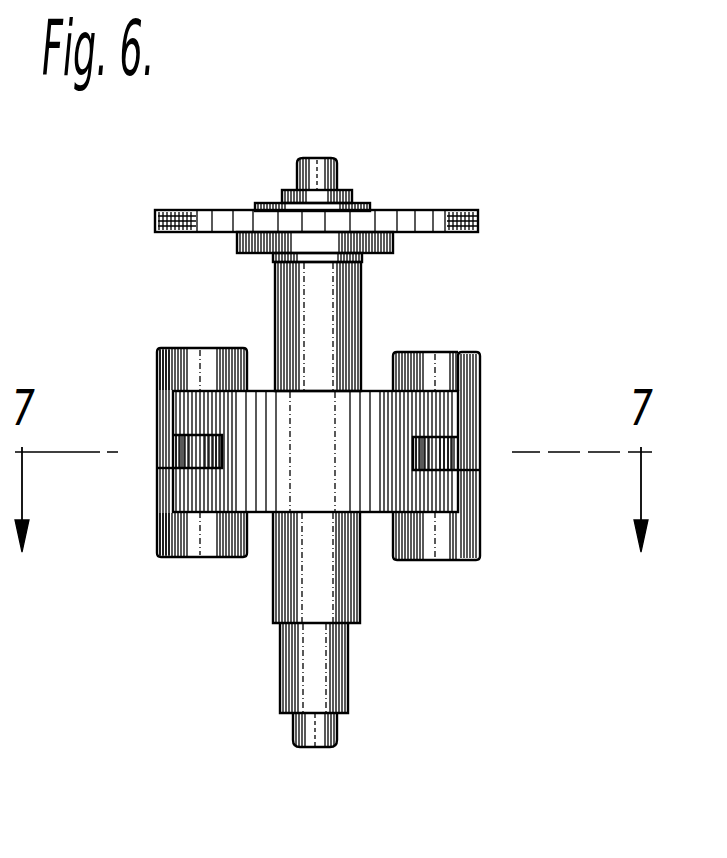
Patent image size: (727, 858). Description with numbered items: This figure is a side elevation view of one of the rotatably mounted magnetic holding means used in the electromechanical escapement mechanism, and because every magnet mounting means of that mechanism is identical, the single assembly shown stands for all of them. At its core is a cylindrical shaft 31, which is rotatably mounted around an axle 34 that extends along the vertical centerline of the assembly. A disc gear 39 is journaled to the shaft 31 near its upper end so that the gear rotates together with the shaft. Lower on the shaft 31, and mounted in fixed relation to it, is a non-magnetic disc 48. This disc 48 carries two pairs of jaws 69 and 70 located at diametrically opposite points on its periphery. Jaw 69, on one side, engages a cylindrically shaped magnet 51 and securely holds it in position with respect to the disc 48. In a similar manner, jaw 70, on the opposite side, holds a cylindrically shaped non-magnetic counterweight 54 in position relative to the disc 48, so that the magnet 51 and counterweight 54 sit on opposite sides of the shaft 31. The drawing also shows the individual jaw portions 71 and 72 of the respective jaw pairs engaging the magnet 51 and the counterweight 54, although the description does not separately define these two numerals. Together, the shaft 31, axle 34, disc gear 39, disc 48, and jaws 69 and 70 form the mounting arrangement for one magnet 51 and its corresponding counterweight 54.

The axle 34 is at (338, 164).
The disc gear 39 is at (447, 210).
The shaft 31 is at (328, 360).
The counterweight 54 is at (190, 348).
The magnet 51 is at (447, 560).
The non-magnetic disc 48 is at (318, 473).
The left slot 72 is at (176, 450).
The jaw 70 is at (165, 470).
The right slot 71 is at (452, 452).
The jaw 69 is at (470, 466).